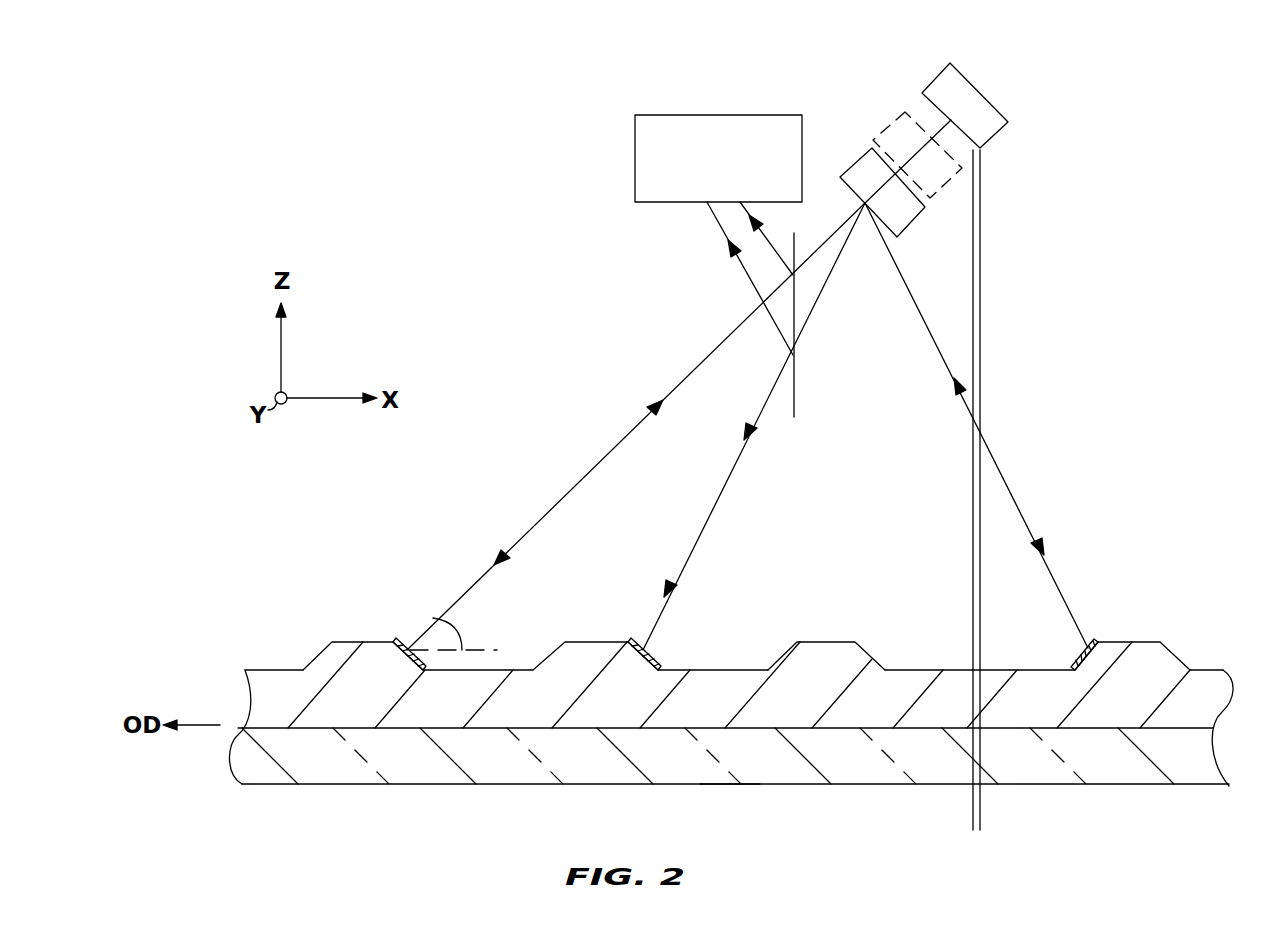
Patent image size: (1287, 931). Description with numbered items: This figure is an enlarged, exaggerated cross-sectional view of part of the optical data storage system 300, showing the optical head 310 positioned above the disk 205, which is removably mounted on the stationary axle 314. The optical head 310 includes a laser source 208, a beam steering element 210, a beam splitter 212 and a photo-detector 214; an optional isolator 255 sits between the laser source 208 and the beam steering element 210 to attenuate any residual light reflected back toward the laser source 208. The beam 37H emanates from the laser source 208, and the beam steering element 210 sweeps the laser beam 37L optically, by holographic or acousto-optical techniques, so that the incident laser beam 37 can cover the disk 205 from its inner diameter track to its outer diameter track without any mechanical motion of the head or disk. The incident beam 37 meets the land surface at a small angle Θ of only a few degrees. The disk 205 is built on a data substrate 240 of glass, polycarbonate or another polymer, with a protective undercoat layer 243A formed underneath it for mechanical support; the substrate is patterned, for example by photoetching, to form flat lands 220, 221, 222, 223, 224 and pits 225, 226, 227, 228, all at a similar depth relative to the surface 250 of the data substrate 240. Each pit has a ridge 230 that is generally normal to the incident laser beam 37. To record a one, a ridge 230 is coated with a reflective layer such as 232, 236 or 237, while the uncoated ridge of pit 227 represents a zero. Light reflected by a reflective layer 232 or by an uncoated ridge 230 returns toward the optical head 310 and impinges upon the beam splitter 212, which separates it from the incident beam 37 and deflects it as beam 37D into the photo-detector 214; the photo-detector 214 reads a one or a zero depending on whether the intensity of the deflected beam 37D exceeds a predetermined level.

The optical data storage system 300 is at (300, 192).
The optical head 310 is at (795, 50).
The photo-detector 214 is at (653, 115).
The isolator 255 is at (890, 132).
The beam from the laser source 37H is at (930, 126).
The laser source 208 is at (993, 143).
The laser beam from the laser source 37L is at (982, 168).
The beam steering element 210 is at (893, 222).
The deflected beam 37D is at (768, 250).
The beam splitter 212 is at (795, 390).
The laser beam 37 is at (569, 503).
The axle 314 is at (970, 485).
The disk 205 is at (1220, 586).
The data substrate 240 is at (280, 698).
The surface of the data substrate 250 is at (255, 723).
The land 220 is at (285, 668).
The pit 225 is at (373, 642).
The land 221 is at (515, 670).
The pit 226 is at (602, 642).
The land 222 is at (745, 670).
The pit 227 is at (823, 640).
The land 223 is at (915, 670).
The pit 228 is at (1153, 640).
The land 224 is at (1213, 672).
The ridge 230 is at (392, 640).
The reflective layer 232 is at (404, 640).
The reflective layer 236 is at (660, 658).
The reflective layer 237 is at (1073, 660).
The protective undercoat layer 243A is at (710, 773).